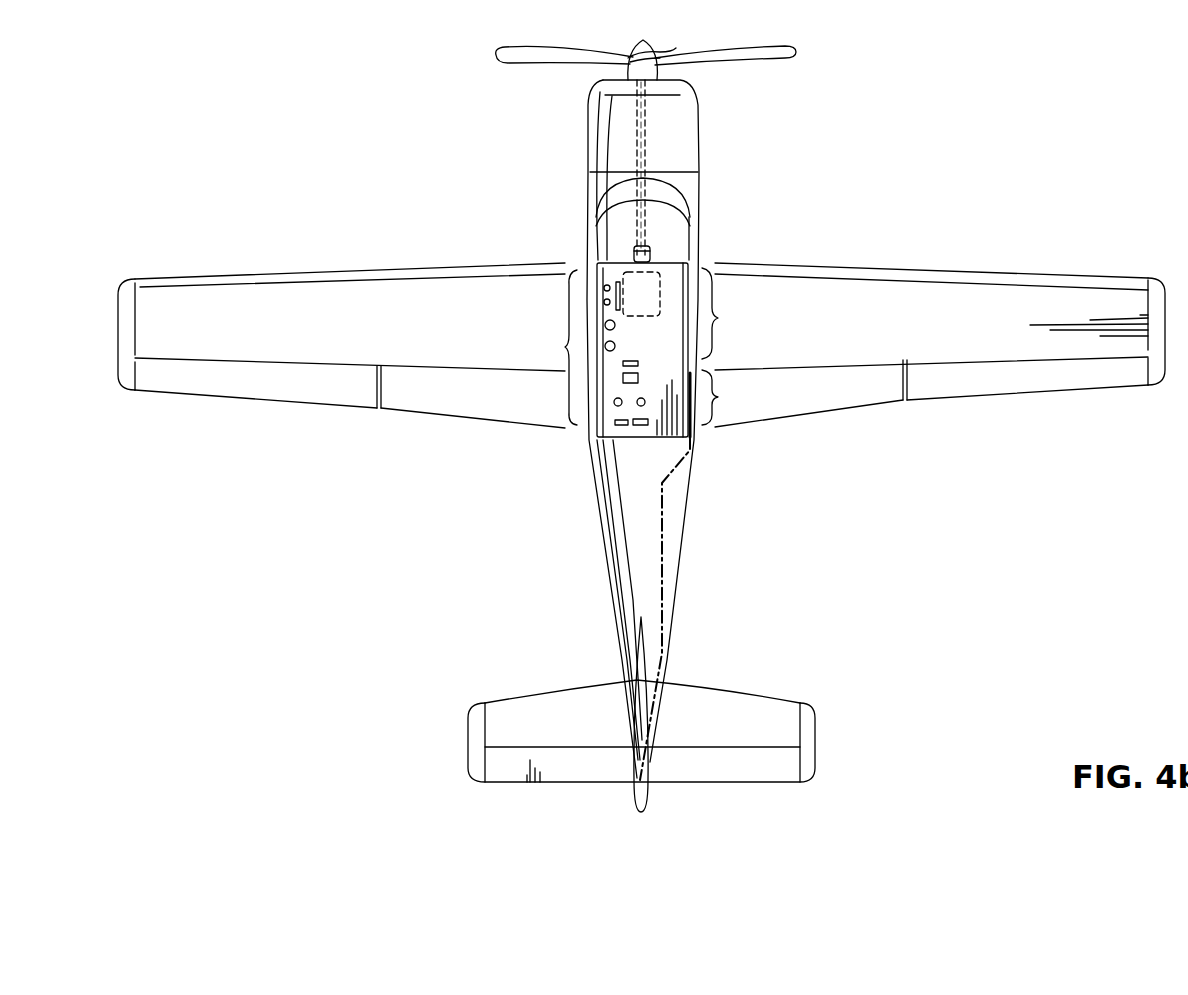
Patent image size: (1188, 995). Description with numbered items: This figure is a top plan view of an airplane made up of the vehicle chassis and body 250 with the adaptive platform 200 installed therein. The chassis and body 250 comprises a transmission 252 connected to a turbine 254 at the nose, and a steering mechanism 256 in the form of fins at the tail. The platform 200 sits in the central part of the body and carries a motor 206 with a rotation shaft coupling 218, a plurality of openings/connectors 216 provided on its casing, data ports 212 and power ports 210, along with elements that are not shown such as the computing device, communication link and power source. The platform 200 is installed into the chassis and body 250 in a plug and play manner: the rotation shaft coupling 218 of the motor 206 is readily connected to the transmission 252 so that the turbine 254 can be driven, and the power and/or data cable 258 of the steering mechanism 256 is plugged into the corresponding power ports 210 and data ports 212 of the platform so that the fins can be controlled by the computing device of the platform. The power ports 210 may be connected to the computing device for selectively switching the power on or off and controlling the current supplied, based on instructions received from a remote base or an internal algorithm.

The platform 200 is at (630, 438).
The motor 206 is at (625, 280).
The power ports 210 is at (738, 397).
The data ports 212 is at (738, 313).
The openings/connectors 216 is at (545, 347).
The rotation shaft coupling 218 is at (634, 256).
The vehicle chassis and body 250 is at (885, 262).
The transmission 252 is at (647, 250).
The turbine 254 is at (790, 52).
The steering mechanism 256 is at (645, 688).
The power and/or data cable 258 is at (664, 585).